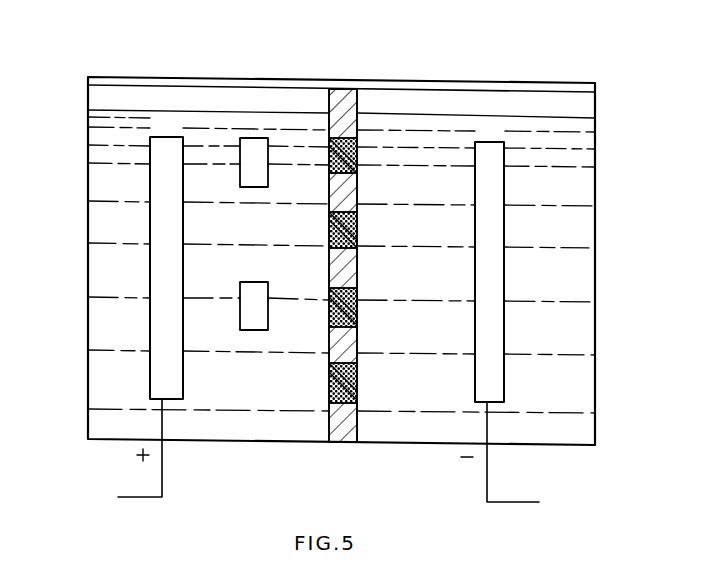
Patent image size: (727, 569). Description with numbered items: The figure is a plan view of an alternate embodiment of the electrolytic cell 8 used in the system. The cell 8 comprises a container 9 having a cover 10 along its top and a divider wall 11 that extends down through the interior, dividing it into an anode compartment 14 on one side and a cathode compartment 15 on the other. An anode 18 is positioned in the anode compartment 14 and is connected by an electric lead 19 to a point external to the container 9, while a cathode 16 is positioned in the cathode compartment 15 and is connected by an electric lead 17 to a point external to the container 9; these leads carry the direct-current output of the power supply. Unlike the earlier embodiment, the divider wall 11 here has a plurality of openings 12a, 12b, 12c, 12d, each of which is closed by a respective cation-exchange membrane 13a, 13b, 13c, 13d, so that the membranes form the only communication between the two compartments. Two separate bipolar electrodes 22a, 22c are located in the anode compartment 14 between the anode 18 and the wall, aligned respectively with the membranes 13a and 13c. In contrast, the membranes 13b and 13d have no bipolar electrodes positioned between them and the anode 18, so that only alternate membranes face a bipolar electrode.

The cell 8 is at (312, 227).
The container 9 is at (86, 370).
The cover 10 is at (148, 77).
The divider wall 11 is at (337, 110).
The opening 12a is at (356, 151).
The opening 12b is at (357, 222).
The opening 12c is at (357, 302).
The opening 12d is at (357, 375).
The cation-exchange membrane 13a is at (329, 165).
The cation-exchange membrane 13b is at (328, 237).
The cation-exchange membrane 13c is at (328, 313).
The cation-exchange membrane 13d is at (328, 390).
The anode compartment 14 is at (112, 282).
The cathode compartment 15 is at (578, 175).
The cathode 16 is at (493, 257).
The electric lead 17 is at (517, 502).
The anode 18 is at (160, 267).
The electric lead 19 is at (132, 497).
The bipolar electrode 22a is at (250, 161).
The bipolar electrode 22c is at (252, 307).